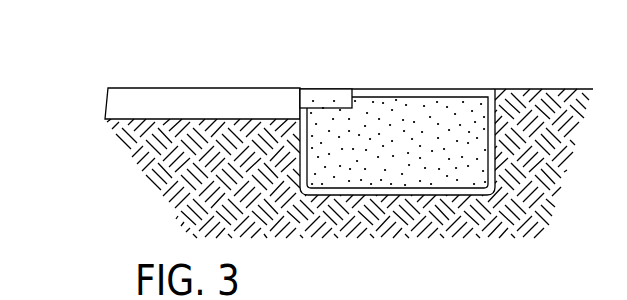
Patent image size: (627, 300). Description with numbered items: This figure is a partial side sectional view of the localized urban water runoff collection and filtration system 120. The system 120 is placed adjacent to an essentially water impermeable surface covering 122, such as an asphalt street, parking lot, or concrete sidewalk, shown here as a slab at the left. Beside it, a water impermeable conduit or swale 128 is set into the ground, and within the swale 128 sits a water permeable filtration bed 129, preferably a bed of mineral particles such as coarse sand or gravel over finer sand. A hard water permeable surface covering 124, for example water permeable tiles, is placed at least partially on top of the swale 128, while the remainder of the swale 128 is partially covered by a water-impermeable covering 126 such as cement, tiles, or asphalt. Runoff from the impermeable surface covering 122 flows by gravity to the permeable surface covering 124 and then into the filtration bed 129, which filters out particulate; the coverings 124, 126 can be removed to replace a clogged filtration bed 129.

The urban water runoff collection and filtration system 120 is at (345, 64).
The water impermeable surface covering 122 is at (198, 88).
The water permeable surface covering 124 is at (318, 88).
The water-impermeable covering 126 is at (460, 88).
The water impermeable conduit or swale 128 is at (495, 158).
The water permeable filtration bed 129 is at (401, 142).